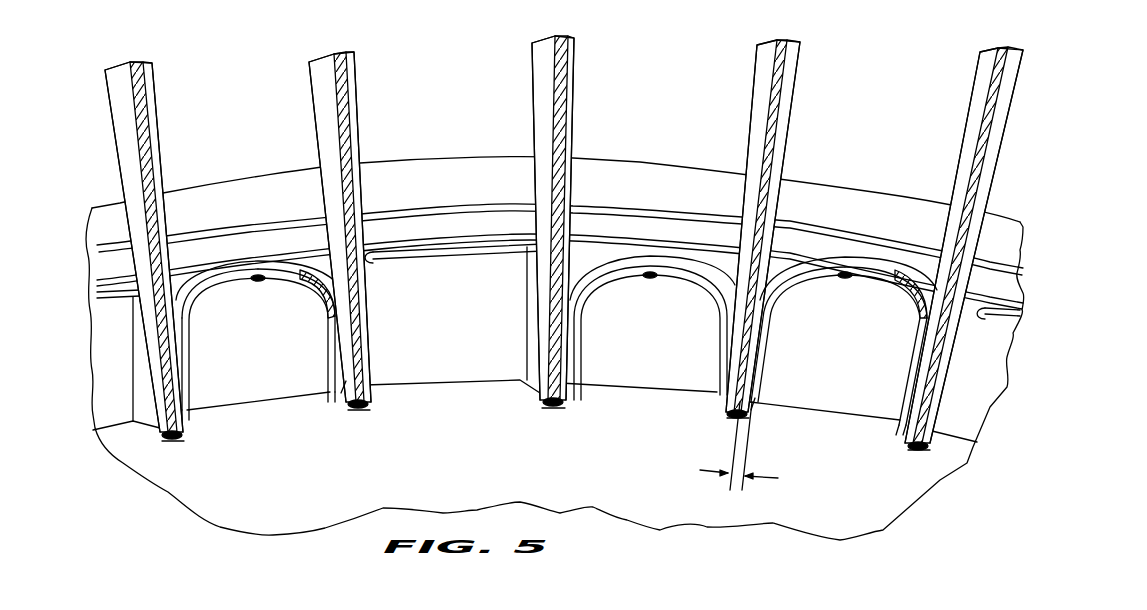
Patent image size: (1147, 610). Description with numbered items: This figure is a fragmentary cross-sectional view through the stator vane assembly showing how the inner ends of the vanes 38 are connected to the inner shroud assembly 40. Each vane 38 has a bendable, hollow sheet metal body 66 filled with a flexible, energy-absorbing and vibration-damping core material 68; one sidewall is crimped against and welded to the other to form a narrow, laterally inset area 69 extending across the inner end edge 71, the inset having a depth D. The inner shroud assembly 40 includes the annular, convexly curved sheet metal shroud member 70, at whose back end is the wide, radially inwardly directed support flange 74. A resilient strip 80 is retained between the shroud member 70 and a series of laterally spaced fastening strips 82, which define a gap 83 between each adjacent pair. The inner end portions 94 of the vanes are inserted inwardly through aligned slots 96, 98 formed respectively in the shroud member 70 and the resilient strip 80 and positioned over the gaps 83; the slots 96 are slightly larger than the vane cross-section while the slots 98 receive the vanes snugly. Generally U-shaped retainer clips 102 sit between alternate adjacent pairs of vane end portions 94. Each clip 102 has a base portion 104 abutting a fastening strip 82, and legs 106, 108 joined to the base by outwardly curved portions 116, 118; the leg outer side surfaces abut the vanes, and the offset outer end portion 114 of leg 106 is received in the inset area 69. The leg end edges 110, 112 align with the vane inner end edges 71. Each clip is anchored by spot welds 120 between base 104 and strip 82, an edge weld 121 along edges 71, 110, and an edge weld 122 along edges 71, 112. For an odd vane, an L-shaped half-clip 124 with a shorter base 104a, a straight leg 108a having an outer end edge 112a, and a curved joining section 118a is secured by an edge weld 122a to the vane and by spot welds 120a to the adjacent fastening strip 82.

The vane 38 is at (573, 239).
The sheet metal body 66 is at (150, 106).
The core material 68 is at (152, 142).
The inner shroud assembly 40 is at (403, 128).
The shroud member 70 is at (425, 173).
The resilient strip 80 is at (437, 231).
The slot 96 is at (140, 223).
The slot 98 is at (150, 260).
The fastening strip 82 is at (275, 260).
The gap 83 is at (146, 300).
The inner end portion 94 is at (142, 356).
The retainer clip 102 is at (322, 325).
The base portion 104 is at (290, 264).
The joining portion 116 is at (194, 287).
The joining portion 118 is at (320, 296).
The leg portion 106 is at (191, 347).
The leg portion 108 is at (327, 362).
The outer end edge 110 is at (187, 420).
The outer end edge 112 is at (333, 401).
The outer end portion 114 is at (192, 397).
The spot weld 120 is at (258, 280).
The inner end edge 71 is at (162, 436).
The edge weld 121 is at (178, 442).
The edge weld 122 is at (362, 412).
The laterally inset area 69 is at (372, 392).
The support flange 74 is at (531, 478).
The base portion 104a is at (886, 292).
The spot weld 120a is at (858, 284).
The joining section 118a is at (922, 320).
The leg 108a is at (906, 386).
The half-clip 124 is at (902, 418).
The outer end edge 112a is at (900, 426).
The edge weld 122a is at (916, 450).
The inset depth D is at (749, 447).